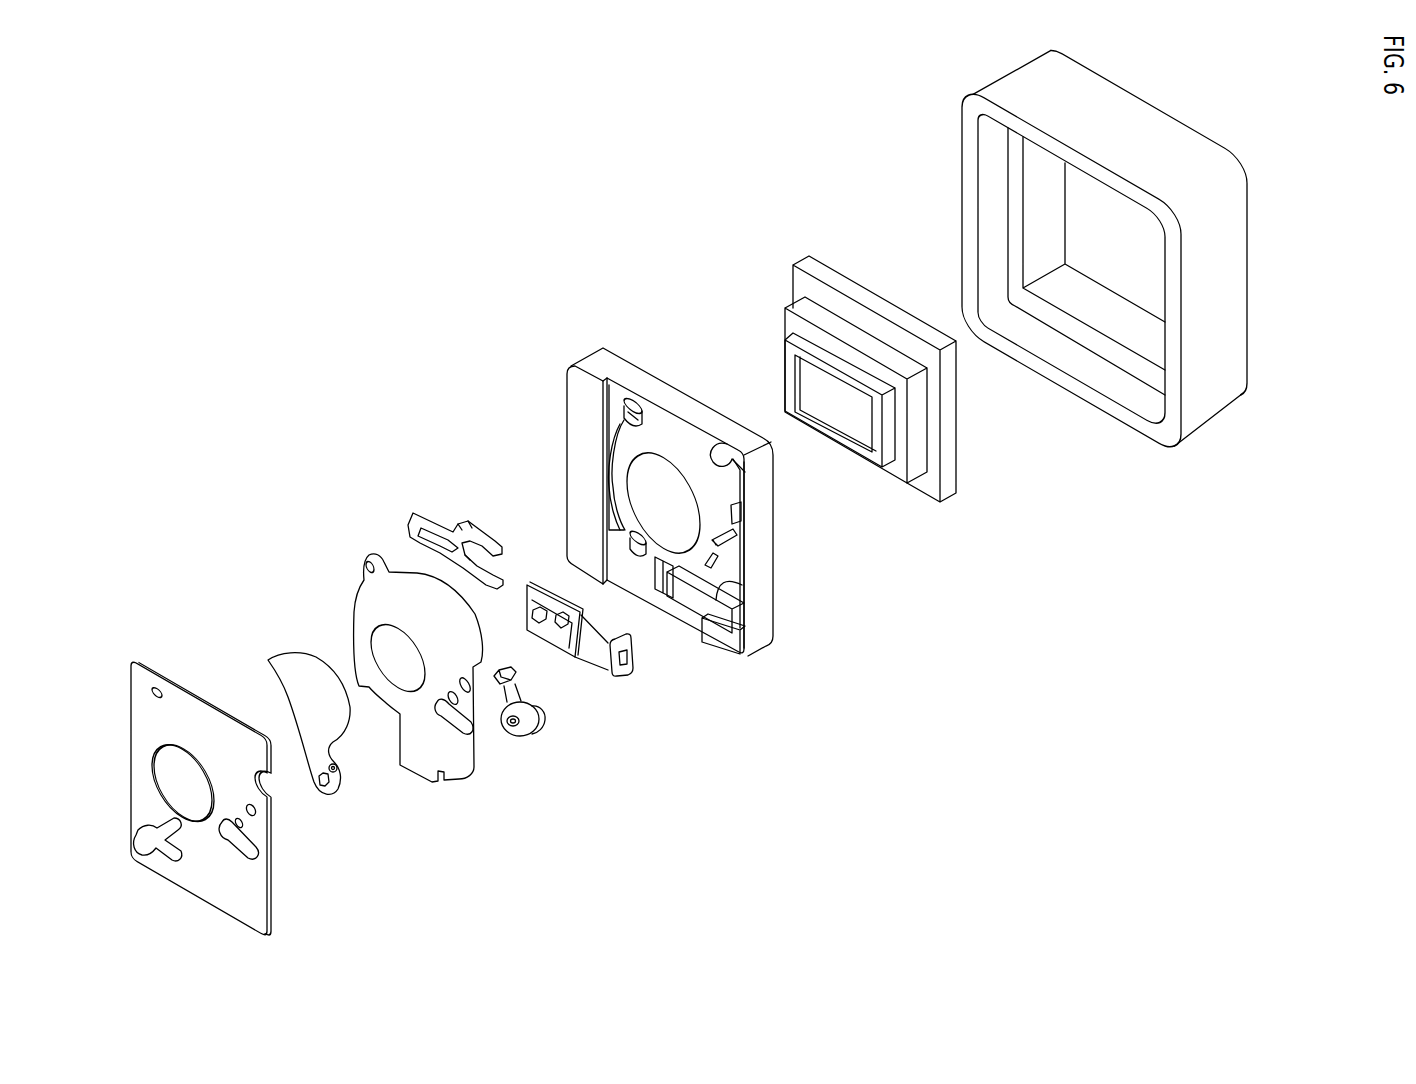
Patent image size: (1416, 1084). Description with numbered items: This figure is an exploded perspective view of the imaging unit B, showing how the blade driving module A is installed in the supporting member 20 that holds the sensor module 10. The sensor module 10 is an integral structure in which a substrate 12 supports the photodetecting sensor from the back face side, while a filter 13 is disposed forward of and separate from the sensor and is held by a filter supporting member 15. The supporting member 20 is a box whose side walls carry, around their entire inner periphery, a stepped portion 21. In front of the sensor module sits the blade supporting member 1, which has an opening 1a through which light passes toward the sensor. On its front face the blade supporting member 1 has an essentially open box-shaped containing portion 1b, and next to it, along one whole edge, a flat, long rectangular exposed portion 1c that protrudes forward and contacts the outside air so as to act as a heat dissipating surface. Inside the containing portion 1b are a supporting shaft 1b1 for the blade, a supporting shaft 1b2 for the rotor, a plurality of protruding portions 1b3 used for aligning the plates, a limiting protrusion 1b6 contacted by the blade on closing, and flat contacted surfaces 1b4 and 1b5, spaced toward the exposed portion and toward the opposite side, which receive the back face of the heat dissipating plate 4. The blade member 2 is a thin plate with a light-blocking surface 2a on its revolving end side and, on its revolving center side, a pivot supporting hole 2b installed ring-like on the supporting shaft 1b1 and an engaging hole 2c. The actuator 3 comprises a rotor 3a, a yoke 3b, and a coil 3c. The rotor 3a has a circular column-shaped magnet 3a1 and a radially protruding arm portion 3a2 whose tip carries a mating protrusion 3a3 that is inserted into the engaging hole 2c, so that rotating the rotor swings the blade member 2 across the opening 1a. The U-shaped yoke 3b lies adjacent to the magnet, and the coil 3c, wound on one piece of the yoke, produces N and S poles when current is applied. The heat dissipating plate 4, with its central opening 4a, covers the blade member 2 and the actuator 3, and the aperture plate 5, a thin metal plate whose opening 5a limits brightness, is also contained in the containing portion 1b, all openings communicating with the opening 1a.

The blade supporting member 1 is at (671, 477).
The opening 1a is at (672, 473).
The containing portion 1b is at (674, 504).
The supporting shaft 1b1 is at (745, 543).
The supporting shaft 1b2 is at (713, 612).
The protruding portions 1b3 is at (631, 414).
The contacted surface 1b4 is at (618, 398).
The contacted surface 1b5 is at (742, 630).
The limiting protrusion 1b6 is at (748, 507).
The exposed portion 1c is at (583, 430).
The blade member 2 is at (298, 708).
The light-blocking surface 2a is at (290, 683).
The pivot supporting hole 2b is at (341, 771).
The engaging hole 2c is at (322, 792).
The actuator 3 is at (568, 635).
The rotor 3a is at (562, 728).
The magnet 3a1 is at (545, 717).
The arm portion 3a2 is at (505, 710).
The mating protrusion 3a3 is at (496, 668).
The yoke 3b is at (428, 512).
The coil 3c is at (632, 660).
The heat dissipating plate 4 is at (201, 757).
The opening 4a is at (175, 763).
The aperture plate 5 is at (395, 653).
The opening 5a is at (402, 638).
The sensor module 10 is at (865, 370).
The substrate 12 is at (817, 268).
The filter 13 is at (857, 432).
The filter supporting member 15 is at (786, 306).
The supporting member 20 is at (1128, 276).
The stepped portion 21 is at (1115, 353).
The blade driving module A is at (801, 754).
The imaging unit B is at (1116, 744).